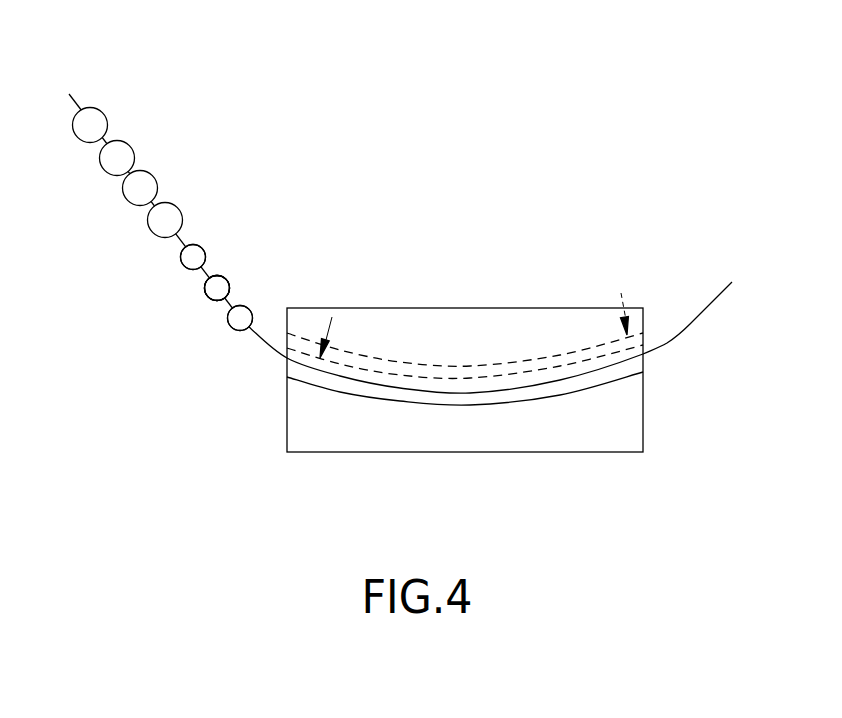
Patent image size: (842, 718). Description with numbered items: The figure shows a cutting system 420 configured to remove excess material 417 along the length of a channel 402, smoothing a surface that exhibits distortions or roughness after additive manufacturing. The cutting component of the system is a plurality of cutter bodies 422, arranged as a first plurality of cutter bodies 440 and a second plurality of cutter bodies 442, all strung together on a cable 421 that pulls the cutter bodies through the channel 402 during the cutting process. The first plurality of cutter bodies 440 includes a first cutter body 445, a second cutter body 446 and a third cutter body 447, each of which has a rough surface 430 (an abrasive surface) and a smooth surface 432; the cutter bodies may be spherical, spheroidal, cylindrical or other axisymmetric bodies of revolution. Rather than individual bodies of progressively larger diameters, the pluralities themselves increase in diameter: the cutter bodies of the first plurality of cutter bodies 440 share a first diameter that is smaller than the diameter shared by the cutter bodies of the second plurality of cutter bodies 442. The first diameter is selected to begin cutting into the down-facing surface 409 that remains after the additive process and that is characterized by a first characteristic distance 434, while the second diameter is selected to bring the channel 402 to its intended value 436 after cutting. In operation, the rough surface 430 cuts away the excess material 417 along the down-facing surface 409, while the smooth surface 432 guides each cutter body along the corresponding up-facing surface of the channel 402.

The channel 402 is at (586, 320).
The down-facing surface 409 is at (397, 373).
The excess material 417 is at (522, 368).
The cutting system 420 is at (247, 95).
The cable 421 is at (708, 310).
The plurality of cutter bodies 422 is at (265, 193).
The rough surface 430 is at (229, 288).
The smooth surface 432 is at (210, 300).
The first characteristic distance 434 is at (306, 398).
The intended value 436 is at (638, 395).
The first plurality of cutter bodies 440 is at (205, 234).
The second plurality of cutter bodies 442 is at (108, 100).
The first cutter body 445 is at (233, 330).
The second cutter body 446 is at (205, 289).
The third cutter body 447 is at (181, 257).